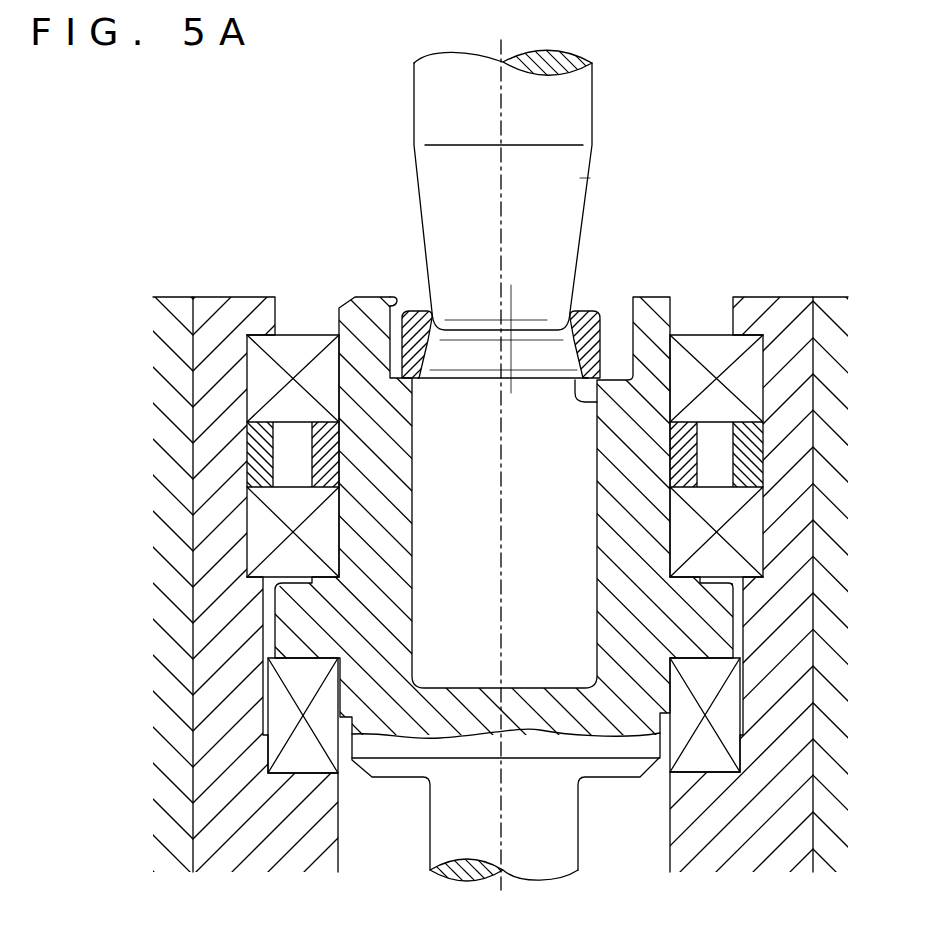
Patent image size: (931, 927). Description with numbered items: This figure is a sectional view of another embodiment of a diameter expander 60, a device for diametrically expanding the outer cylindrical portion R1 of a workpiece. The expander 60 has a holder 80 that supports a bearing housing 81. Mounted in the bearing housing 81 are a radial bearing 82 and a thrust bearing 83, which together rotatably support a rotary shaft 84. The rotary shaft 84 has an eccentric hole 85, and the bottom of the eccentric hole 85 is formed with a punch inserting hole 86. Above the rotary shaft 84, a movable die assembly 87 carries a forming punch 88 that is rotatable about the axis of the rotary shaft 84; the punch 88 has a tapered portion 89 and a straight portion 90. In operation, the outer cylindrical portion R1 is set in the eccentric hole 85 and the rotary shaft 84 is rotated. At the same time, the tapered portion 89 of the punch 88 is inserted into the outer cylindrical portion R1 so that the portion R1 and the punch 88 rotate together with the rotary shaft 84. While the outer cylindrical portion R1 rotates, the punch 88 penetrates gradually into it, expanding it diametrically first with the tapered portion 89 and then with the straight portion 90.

The diameter expander 60 is at (294, 171).
The holder 80 is at (172, 472).
The bearing housing 81 is at (188, 407).
The radial bearing 82 is at (300, 342).
The thrust bearing 83 is at (277, 698).
The rotary shaft 84 is at (352, 297).
The eccentric hole 85 is at (396, 295).
The punch inserting hole 86 is at (592, 366).
The movable die assembly 87 is at (381, 98).
The forming punch 88 is at (602, 97).
The tapered portion 89 is at (578, 178).
The straight portion 90 is at (583, 121).
The outer cylindrical portion R1 is at (592, 307).